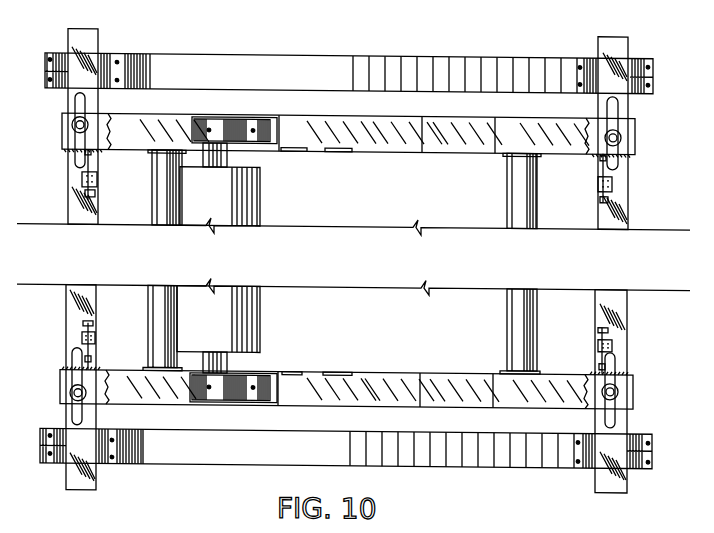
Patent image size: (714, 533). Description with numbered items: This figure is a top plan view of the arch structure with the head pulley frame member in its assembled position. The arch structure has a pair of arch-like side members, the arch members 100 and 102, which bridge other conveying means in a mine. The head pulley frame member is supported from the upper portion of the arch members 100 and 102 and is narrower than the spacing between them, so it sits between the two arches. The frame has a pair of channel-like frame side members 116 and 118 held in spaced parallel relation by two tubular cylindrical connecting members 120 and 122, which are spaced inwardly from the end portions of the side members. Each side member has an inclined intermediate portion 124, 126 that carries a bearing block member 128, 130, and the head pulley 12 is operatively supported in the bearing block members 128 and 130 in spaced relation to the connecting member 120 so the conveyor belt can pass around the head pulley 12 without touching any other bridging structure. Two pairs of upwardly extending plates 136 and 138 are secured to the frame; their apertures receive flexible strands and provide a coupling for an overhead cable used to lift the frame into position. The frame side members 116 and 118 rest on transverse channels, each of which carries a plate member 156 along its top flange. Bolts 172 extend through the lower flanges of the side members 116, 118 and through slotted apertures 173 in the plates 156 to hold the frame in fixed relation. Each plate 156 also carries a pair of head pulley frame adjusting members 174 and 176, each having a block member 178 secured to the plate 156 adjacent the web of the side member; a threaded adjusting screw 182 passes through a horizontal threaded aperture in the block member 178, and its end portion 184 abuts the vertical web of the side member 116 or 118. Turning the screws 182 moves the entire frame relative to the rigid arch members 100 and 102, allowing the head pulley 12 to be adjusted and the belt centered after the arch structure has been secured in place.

The head pulley 12 is at (264, 212).
The arch member 100 is at (167, 462).
The arch member 102 is at (181, 52).
The frame side member 116 is at (318, 369).
The frame side member 118 is at (377, 148).
The tubular cylindrical connecting member 120 is at (147, 324).
The tubular cylindrical connecting member 122 is at (505, 345).
The inclined intermediate portion 124 is at (252, 402).
The inclined intermediate portion 126 is at (251, 118).
The bearing block member 128 is at (247, 400).
The bearing block member 130 is at (226, 101).
The upwardly extending plate 136 is at (305, 148).
The upwardly extending plate 138 is at (328, 148).
The plate member 156 is at (65, 472).
The bolt 172 is at (73, 124).
The slotted aperture 173 is at (76, 95).
The head pulley frame adjusting member 174 is at (100, 179).
The head pulley frame adjusting member 176 is at (621, 177).
The block member 178 is at (82, 175).
The threaded adjusting screw 182 is at (93, 196).
The screw end portion 184 is at (91, 153).